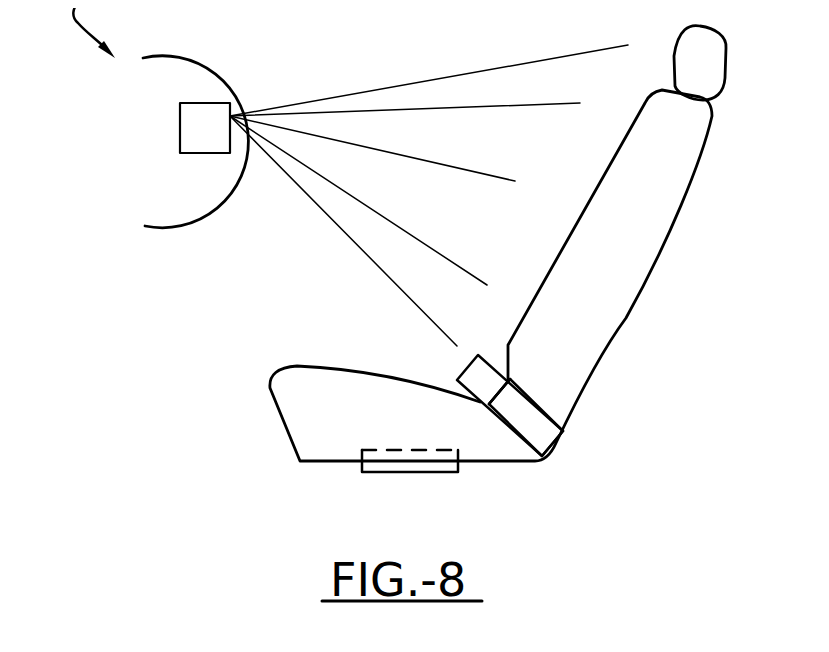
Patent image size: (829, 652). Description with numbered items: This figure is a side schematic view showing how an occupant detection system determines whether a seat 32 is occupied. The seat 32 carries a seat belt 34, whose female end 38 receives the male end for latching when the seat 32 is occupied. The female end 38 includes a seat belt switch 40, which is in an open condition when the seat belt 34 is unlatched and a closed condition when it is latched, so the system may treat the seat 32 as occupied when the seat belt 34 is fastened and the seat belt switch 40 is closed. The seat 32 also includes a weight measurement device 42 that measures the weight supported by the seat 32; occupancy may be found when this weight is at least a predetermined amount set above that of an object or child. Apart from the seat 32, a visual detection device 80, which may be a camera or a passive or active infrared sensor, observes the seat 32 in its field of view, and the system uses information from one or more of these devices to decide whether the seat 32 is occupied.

The seat 32 is at (657, 280).
The seat belt 34 is at (488, 325).
The female end 38 is at (533, 426).
The seat belt switch 40 is at (513, 430).
The weight measurement device 42 is at (392, 464).
The visual detection device 80 is at (189, 121).